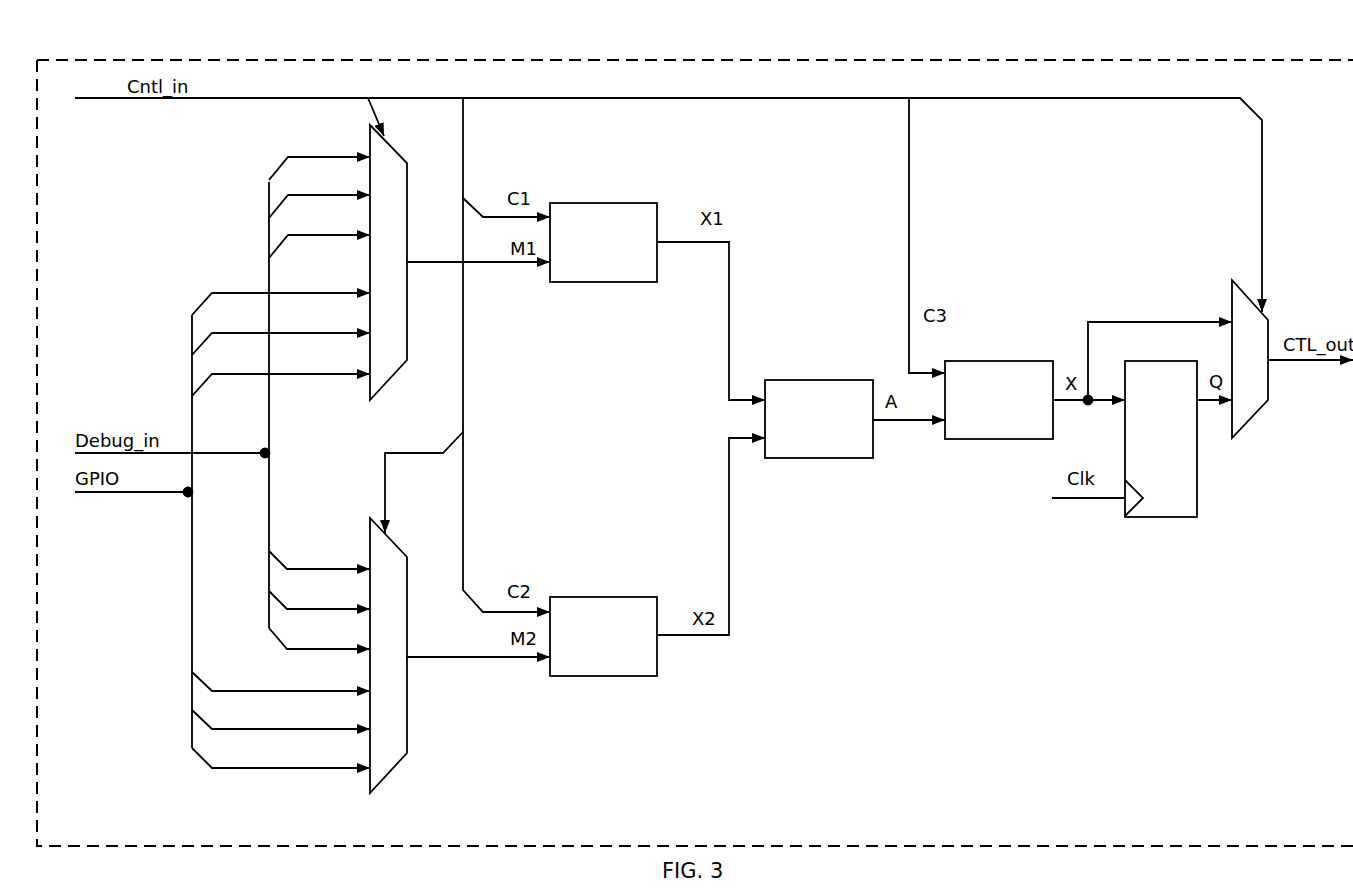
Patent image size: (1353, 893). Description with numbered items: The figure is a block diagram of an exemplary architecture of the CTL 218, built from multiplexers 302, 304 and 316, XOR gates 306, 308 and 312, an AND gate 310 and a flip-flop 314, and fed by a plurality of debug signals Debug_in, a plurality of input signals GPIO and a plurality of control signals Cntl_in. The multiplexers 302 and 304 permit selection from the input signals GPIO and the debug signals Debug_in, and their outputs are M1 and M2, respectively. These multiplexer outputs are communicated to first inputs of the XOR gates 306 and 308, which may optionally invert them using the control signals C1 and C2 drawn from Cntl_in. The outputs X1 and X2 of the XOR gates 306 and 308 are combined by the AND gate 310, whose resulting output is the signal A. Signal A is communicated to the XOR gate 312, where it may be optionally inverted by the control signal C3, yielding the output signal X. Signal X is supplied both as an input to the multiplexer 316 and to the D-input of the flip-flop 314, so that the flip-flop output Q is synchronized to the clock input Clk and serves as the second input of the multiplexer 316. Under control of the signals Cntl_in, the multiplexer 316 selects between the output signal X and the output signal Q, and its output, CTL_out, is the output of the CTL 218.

The CTL 218 is at (70, 60).
The multiplexer 302 is at (409, 153).
The multiplexer 304 is at (398, 768).
The XOR gate 306 is at (578, 282).
The XOR gate 308 is at (578, 676).
The AND gate 310 is at (793, 458).
The XOR gate 312 is at (972, 439).
The flip-flop 314 is at (1152, 517).
The multiplexer 316 is at (1250, 420).